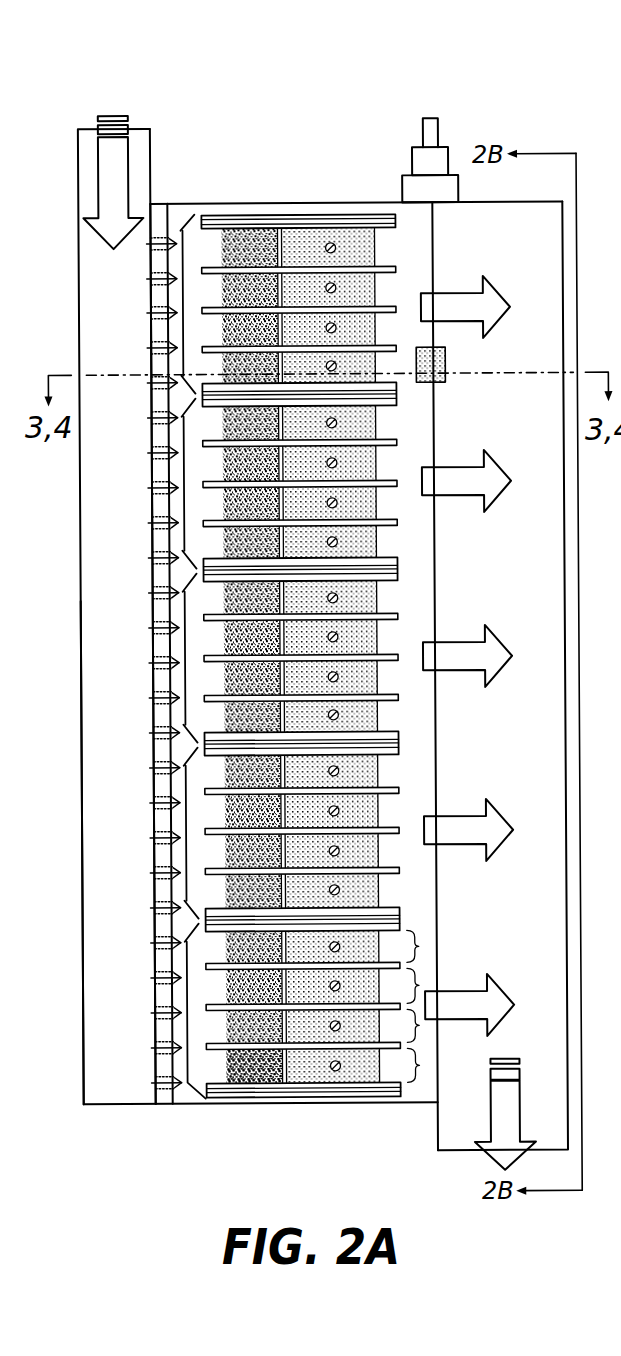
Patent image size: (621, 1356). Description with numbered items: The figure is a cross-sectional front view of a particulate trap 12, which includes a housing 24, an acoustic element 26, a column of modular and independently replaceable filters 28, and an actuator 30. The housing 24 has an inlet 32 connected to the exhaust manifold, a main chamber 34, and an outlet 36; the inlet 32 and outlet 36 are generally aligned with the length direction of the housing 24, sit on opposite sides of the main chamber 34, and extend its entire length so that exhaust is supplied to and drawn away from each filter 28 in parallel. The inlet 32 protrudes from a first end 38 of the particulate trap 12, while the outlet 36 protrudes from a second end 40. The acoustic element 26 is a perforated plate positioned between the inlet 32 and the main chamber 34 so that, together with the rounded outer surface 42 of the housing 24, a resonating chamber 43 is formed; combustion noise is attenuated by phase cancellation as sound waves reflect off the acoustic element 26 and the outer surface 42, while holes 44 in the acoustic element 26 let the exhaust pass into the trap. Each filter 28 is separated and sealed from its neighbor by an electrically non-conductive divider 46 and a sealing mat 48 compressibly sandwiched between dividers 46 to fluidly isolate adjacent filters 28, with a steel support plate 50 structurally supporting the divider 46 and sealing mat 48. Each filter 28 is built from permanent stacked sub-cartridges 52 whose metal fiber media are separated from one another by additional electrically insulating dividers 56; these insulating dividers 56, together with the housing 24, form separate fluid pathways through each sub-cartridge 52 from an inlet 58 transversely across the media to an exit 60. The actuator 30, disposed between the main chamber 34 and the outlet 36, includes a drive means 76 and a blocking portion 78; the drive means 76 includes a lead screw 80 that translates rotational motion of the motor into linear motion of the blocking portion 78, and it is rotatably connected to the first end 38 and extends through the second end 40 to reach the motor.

The particulate trap 12 is at (263, 87).
The housing 24 is at (266, 1106).
The acoustic element 26 is at (165, 1063).
The filter 28 is at (185, 293).
The actuator 30 is at (412, 160).
The inlet 32 is at (143, 126).
The main chamber 34 is at (422, 1104).
The outlet 36 is at (536, 1151).
The first end 38 is at (566, 203).
The second end 40 is at (84, 1105).
The outer surface 42 is at (81, 672).
The resonating chamber 43 is at (93, 613).
The holes 44 is at (162, 1086).
The divider 46 is at (396, 218).
The sealing mat 48 is at (396, 222).
The support plate 50 is at (396, 218).
The sub-cartridge 52 is at (417, 947).
The insulating divider 56 is at (222, 1041).
The inlet 58 is at (225, 1066).
The exit 60 is at (417, 1065).
The drive means 76 is at (450, 122).
The blocking portion 78 is at (448, 366).
The lead screw 80 is at (436, 338).